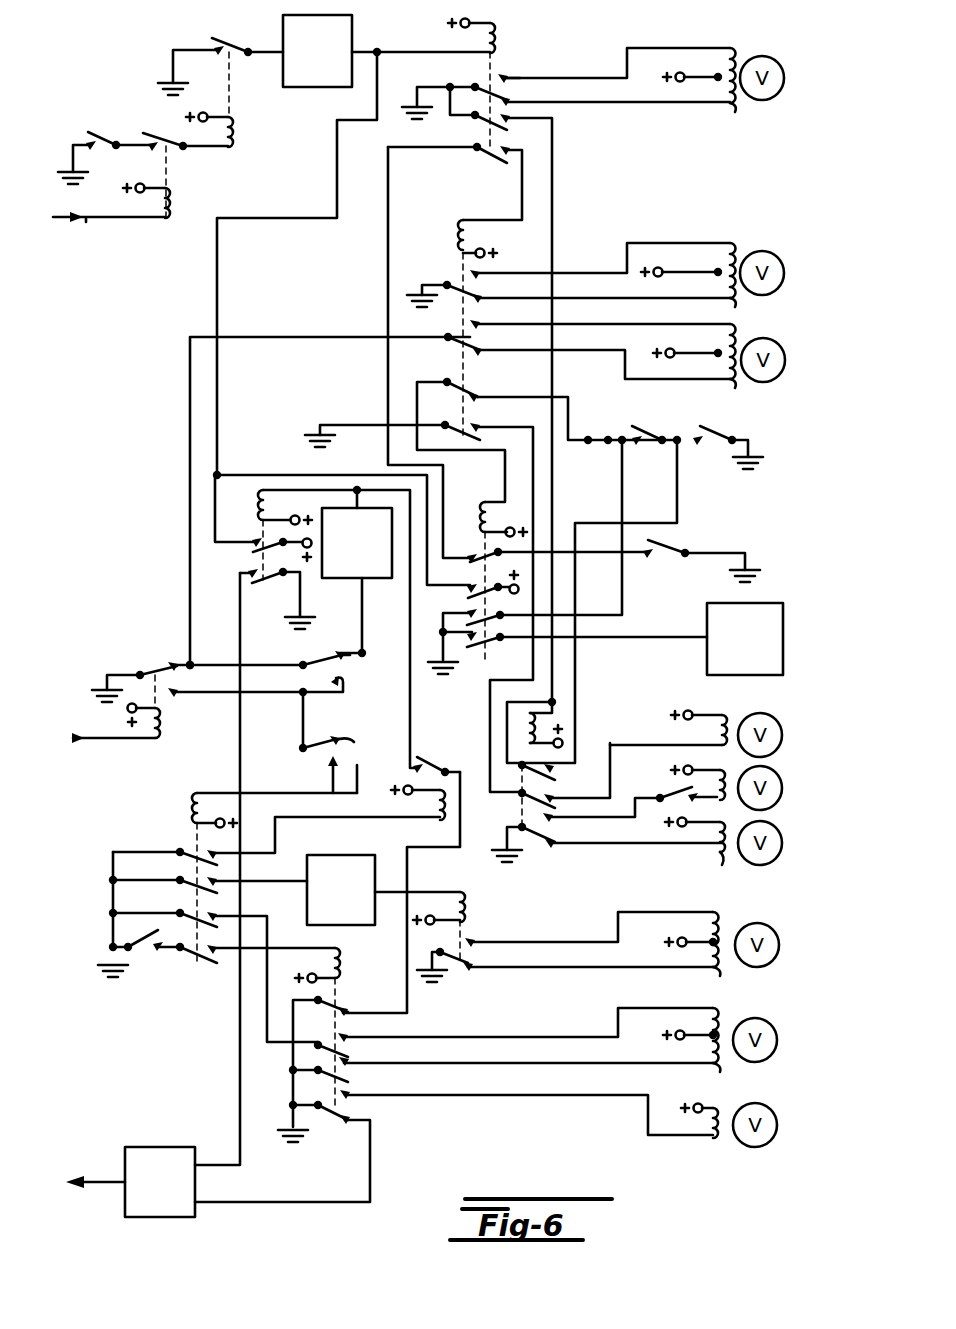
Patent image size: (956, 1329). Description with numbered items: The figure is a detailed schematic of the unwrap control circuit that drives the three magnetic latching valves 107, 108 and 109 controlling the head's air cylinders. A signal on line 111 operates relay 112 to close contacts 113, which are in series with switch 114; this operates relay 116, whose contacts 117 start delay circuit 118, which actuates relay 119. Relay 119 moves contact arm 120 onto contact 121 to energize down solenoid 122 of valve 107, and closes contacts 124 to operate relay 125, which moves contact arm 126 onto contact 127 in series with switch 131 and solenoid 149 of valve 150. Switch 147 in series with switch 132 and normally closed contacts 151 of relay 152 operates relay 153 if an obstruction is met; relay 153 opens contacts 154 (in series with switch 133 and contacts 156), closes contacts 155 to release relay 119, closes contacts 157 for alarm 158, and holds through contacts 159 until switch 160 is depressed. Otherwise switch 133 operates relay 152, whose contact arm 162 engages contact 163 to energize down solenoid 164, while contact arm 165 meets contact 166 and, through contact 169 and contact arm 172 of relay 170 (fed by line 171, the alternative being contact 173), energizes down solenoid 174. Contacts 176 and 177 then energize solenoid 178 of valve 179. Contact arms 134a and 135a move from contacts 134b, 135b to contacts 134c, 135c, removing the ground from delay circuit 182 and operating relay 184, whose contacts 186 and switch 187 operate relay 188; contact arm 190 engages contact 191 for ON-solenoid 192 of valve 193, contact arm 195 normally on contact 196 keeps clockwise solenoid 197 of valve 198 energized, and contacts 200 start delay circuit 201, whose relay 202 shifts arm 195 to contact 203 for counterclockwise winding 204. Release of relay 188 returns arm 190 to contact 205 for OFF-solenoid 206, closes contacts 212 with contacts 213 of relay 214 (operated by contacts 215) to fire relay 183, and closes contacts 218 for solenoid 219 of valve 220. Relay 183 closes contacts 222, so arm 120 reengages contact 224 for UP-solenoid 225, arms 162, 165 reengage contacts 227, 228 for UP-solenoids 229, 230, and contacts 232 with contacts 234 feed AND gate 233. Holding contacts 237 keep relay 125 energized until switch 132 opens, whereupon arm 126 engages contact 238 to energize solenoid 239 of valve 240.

The valve 107 is at (785, 82).
The valve 108 is at (786, 277).
The valve 109 is at (787, 361).
The line 111 is at (86, 224).
The relay 112 is at (174, 196).
The contacts 113 is at (152, 140).
The switch 114 is at (97, 130).
The relay 116 is at (236, 138).
The contacts 117 is at (227, 44).
The delay circuit 118 is at (355, 37).
The relay 119 is at (503, 38).
The contact arm 120 is at (484, 80).
The contact 121 is at (508, 77).
The down solenoid 122 is at (738, 54).
The contacts 124 is at (478, 124).
The relay 125 is at (526, 717).
The contact arm 126 is at (520, 824).
The contact 127 is at (553, 820).
The switch 131 is at (668, 790).
The switch 132 is at (716, 432).
The switch 133 is at (676, 548).
The contact arm 134a is at (306, 756).
The contact 134b is at (369, 743).
The contact 134c is at (333, 775).
The contact arm 135a is at (302, 662).
The contact 135b is at (336, 650).
The contact 135c is at (331, 702).
The switch 147 is at (648, 447).
The solenoid 149 is at (731, 762).
The valve 150 is at (783, 786).
The contacts 151 is at (477, 392).
The relay 152 is at (455, 232).
The relay 153 is at (480, 500).
The contacts 154 is at (478, 553).
The contacts 155 is at (476, 587).
The contacts 156 is at (449, 171).
The contacts 157 is at (462, 652).
The alarm 158 is at (785, 627).
The contacts 159 is at (466, 610).
The switch 160 is at (606, 434).
The contact arm 162 is at (457, 276).
The contact 163 is at (499, 253).
The down solenoid 164 is at (735, 249).
The contact arm 165 is at (455, 343).
The contact 166 is at (493, 315).
The contact 169 is at (188, 660).
The relay 170 is at (165, 738).
The line 171 is at (91, 742).
The contact arm 172 is at (143, 668).
The contact 173 is at (176, 693).
The down solenoid 174 is at (728, 323).
The contacts 176 is at (476, 424).
The contacts 177 is at (553, 800).
The solenoid 178 is at (730, 714).
The valve 179 is at (783, 736).
The delay circuit 182 is at (380, 580).
The relay 183 is at (258, 496).
The relay 184 is at (185, 796).
The contacts 186 is at (202, 964).
The switch 187 is at (141, 950).
The relay 188 is at (347, 957).
The contact arm 190 is at (350, 1058).
The contact 191 is at (339, 1032).
The ON-solenoid 192 is at (732, 1018).
The valve / contacts 193 is at (178, 910).
The contact arm 195 is at (468, 954).
The contact 196 is at (462, 969).
The clockwise solenoid 197 is at (732, 984).
The valve 198 is at (780, 945).
The contacts 200 is at (178, 878).
The delay circuit 201 is at (328, 857).
The relay 202 is at (470, 896).
The contact 203 is at (478, 940).
The counterclockwise winding 204 is at (724, 922).
The contact 205 is at (347, 1090).
The OFF-solenoid 206 is at (720, 1070).
The contacts 212 is at (347, 1003).
The contacts 213 is at (433, 760).
The relay 214 is at (446, 820).
The contacts 215 is at (180, 848).
The contacts 218 is at (348, 1118).
The solenoid 219 is at (726, 1111).
The valve 220 is at (778, 1116).
The contacts 222 is at (250, 545).
The contact 224 is at (512, 103).
The UP-solenoid 225 is at (748, 119).
The contact 227 is at (486, 298).
The contact 228 is at (487, 350).
The UP-solenoid 229 is at (754, 312).
The UP-solenoid 230 is at (731, 388).
The contacts 232 is at (257, 590).
The AND gate 233 is at (158, 1147).
The contacts 234 is at (337, 1124).
The contacts 237 is at (552, 770).
The contact 238 is at (550, 848).
The solenoid 239 is at (722, 870).
The valve 240 is at (783, 842).